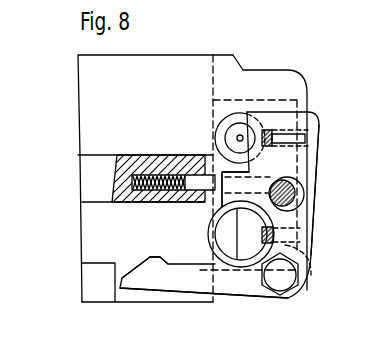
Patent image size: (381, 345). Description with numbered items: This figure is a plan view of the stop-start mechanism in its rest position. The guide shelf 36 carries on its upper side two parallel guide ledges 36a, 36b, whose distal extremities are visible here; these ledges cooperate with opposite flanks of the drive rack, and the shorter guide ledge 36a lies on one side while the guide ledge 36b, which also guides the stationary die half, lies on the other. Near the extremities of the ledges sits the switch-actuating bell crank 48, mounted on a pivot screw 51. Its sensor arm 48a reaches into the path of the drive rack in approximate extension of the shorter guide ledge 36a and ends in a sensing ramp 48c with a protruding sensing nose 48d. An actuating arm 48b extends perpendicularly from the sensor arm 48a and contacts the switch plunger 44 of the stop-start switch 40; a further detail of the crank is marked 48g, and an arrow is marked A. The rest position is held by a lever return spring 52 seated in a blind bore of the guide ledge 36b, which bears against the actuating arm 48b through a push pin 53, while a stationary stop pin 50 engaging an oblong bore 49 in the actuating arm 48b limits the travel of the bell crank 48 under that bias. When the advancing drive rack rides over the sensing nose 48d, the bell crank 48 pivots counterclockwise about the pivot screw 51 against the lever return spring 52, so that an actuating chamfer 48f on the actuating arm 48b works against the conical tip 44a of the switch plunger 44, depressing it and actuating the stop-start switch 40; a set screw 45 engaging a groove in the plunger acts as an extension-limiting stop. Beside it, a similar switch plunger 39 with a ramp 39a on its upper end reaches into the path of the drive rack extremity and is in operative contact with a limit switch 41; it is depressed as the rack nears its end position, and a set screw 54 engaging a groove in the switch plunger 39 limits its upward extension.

The guide shelf 36 is at (90, 100).
The guide ledge 36a is at (98, 288).
The guide ledge 36b is at (97, 180).
The switch plunger 39 is at (245, 230).
The ramp 39a is at (227, 248).
The stop-start switch 40 is at (300, 90).
The limit switch 41 is at (300, 258).
The switch plunger 44 is at (216, 130).
The conical tip 44a is at (238, 133).
The set screw 45 is at (305, 113).
The switch-actuating bell crank 48 is at (328, 133).
The sensor arm 48a is at (176, 277).
The actuating arm 48b is at (303, 156).
The sensing ramp 48c is at (133, 268).
The sensing nose 48d is at (152, 257).
The actuating chamfer 48f is at (252, 133).
The lever shoulder 48g is at (207, 150).
The oblong bore 49 is at (298, 201).
The stationary stop pin 50 is at (295, 187).
The pivot screw 51 is at (291, 293).
The lever return spring 52 is at (144, 190).
The push pin 53 is at (200, 178).
The set screw 54 is at (288, 242).
The viewing direction A is at (320, 245).